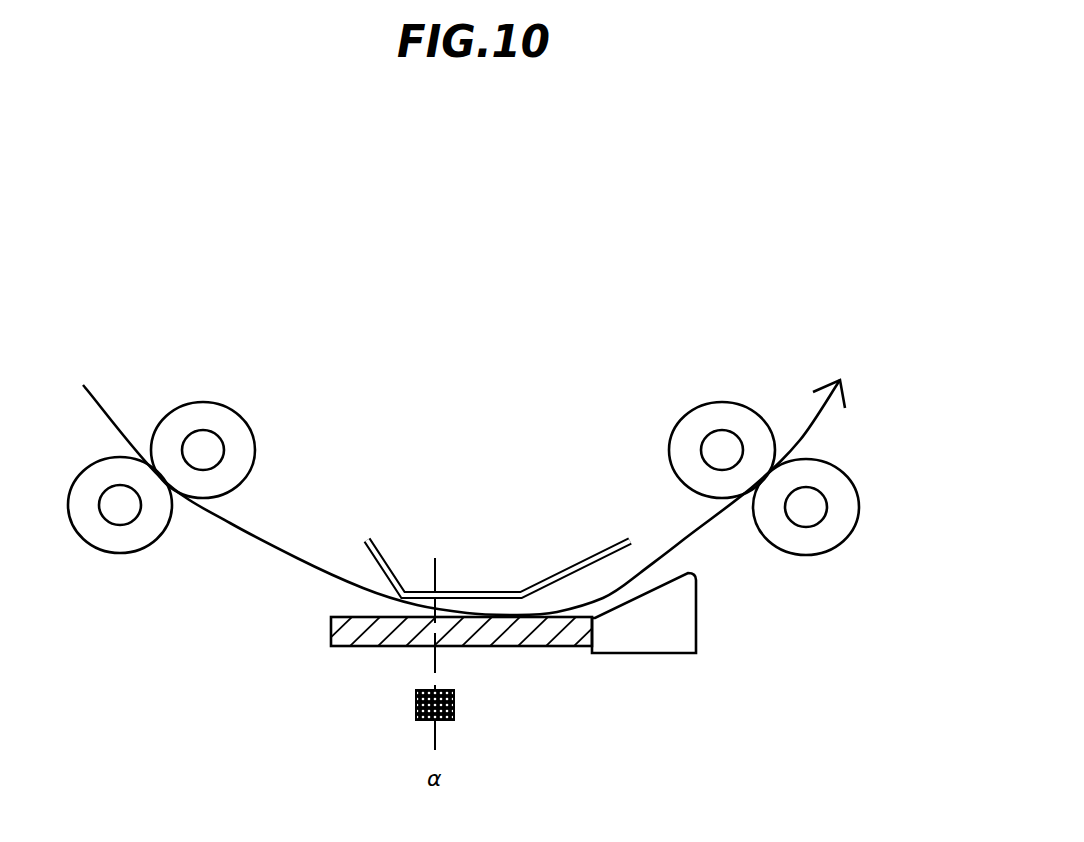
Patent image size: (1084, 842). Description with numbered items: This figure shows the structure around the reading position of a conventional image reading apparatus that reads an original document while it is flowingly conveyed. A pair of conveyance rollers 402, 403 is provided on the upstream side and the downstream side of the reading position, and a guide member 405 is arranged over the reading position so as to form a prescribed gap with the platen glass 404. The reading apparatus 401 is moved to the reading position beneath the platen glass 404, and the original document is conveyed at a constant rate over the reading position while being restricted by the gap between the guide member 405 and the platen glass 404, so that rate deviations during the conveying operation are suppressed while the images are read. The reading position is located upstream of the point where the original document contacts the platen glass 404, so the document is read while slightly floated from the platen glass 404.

The reading apparatus 401 is at (450, 722).
The conveyance roller 402 is at (143, 525).
The conveyance roller 403 is at (815, 533).
The platen glass 404 is at (558, 632).
The guide member 405 is at (563, 572).